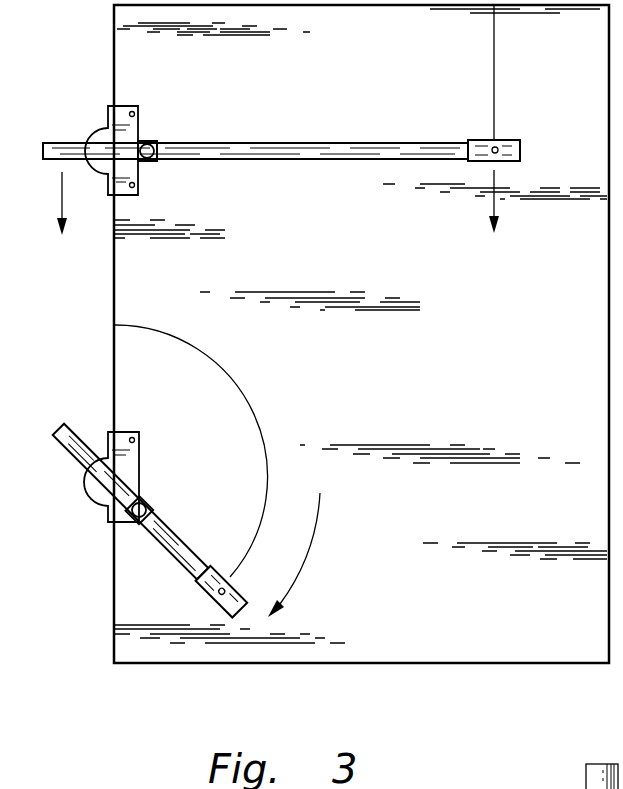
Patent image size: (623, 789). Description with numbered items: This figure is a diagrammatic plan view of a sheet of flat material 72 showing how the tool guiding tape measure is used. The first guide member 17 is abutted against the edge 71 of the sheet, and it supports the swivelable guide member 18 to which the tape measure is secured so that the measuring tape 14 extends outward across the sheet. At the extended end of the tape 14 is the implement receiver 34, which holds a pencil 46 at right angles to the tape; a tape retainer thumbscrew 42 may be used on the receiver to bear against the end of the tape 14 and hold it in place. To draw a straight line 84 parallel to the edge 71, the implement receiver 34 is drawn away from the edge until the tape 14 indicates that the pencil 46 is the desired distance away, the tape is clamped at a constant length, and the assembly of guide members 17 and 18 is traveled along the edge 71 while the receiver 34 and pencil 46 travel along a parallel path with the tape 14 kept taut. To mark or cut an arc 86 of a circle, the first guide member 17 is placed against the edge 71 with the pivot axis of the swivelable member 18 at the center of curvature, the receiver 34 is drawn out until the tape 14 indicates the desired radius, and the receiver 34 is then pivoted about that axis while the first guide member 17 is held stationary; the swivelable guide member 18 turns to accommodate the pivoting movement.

The measuring tape 14 is at (327, 142).
The first guide member 17 is at (125, 106).
The swivelable guide member 18 is at (149, 160).
The implement receiver 34 is at (512, 109).
The tape retainer thumbscrew 42 is at (149, 144).
The pencil 46 is at (500, 141).
The edge 71 is at (113, 593).
The sheet of flat material 72 is at (540, 612).
The straight line 84 is at (486, 53).
The arc 86 is at (260, 388).